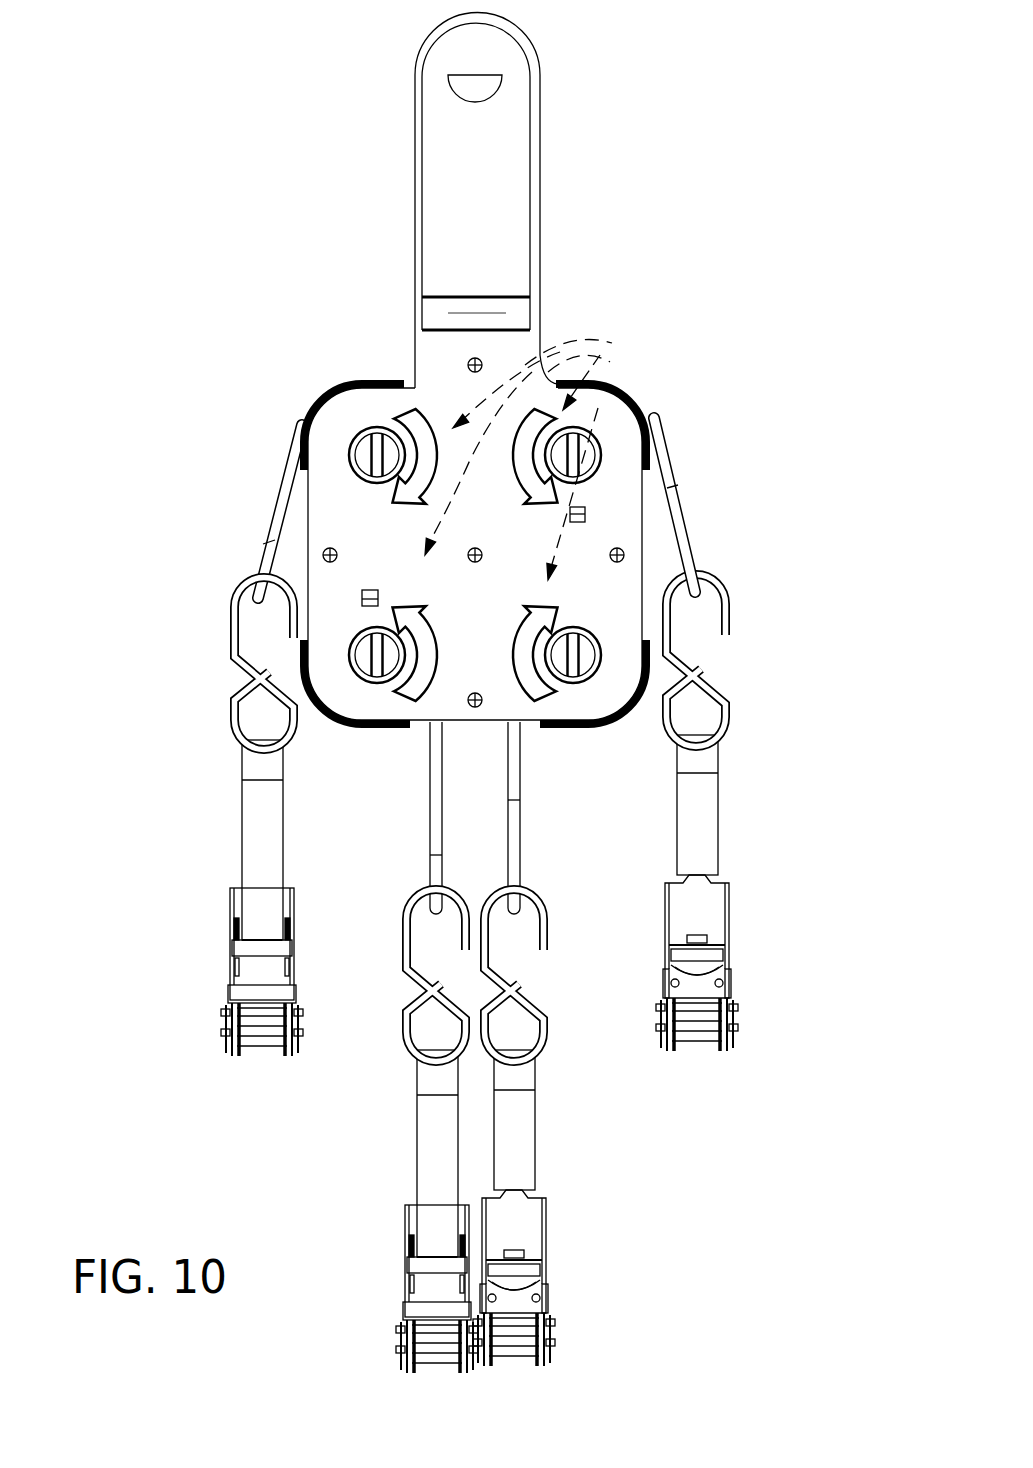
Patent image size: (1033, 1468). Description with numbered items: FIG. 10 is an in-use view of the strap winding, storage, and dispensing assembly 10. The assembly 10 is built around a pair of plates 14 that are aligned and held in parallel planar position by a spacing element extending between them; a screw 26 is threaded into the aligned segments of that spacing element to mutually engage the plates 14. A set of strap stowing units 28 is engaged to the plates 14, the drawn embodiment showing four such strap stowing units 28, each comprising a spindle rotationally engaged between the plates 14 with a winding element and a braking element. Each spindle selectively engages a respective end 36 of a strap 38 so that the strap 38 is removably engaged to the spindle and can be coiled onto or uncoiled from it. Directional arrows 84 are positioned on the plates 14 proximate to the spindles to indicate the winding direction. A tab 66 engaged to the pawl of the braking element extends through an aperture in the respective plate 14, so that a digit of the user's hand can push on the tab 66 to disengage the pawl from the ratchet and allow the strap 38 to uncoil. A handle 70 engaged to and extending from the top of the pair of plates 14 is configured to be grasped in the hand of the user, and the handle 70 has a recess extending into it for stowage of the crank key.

The strap winding, storage, and dispensing assembly 10 is at (469, 693).
The plate 14 is at (300, 483).
The screw 26 is at (300, 555).
The strap stowing unit 28 is at (606, 400).
The end of strap 36 is at (405, 395).
The strap 38 is at (293, 375).
The tab 66 is at (340, 608).
The handle 70 is at (560, 158).
The directional arrow 84 is at (600, 613).